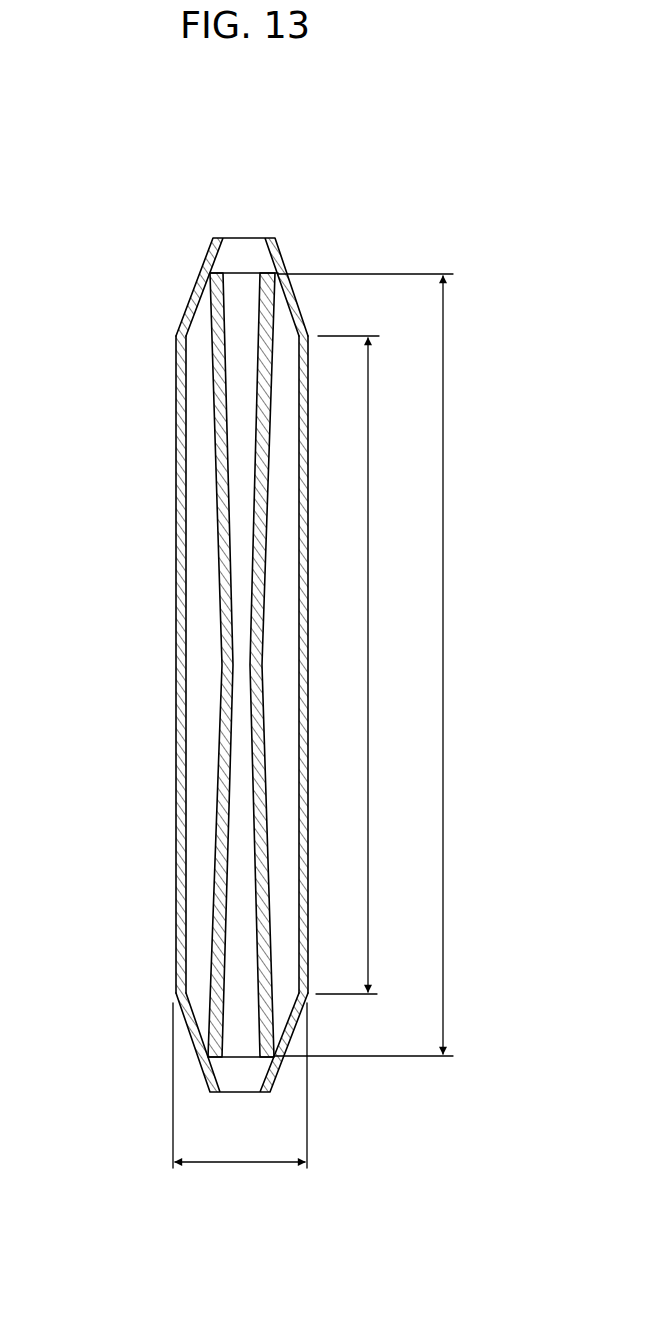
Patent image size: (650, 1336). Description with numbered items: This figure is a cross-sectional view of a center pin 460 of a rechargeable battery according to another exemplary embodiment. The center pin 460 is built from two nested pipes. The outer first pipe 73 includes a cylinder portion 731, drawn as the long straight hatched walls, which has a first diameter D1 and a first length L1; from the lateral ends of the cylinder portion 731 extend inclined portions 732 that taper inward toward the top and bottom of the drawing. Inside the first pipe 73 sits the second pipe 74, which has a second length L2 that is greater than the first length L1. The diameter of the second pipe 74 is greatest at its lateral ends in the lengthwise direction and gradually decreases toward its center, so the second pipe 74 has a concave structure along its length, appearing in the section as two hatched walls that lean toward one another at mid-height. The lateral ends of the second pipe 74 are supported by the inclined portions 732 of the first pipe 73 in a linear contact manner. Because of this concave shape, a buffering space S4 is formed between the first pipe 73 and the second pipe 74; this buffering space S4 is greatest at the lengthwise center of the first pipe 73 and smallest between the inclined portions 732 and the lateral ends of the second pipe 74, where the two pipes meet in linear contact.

The center pin 460 is at (263, 153).
The first pipe 73 is at (203, 665).
The cylinder portion 731 is at (181, 386).
The inclined portions 732 is at (191, 298).
The second pipe 74 is at (220, 662).
The buffering space S4 is at (202, 732).
The first length L1 is at (359, 665).
The second length L2 is at (375, 665).
The first diameter D1 is at (240, 1085).